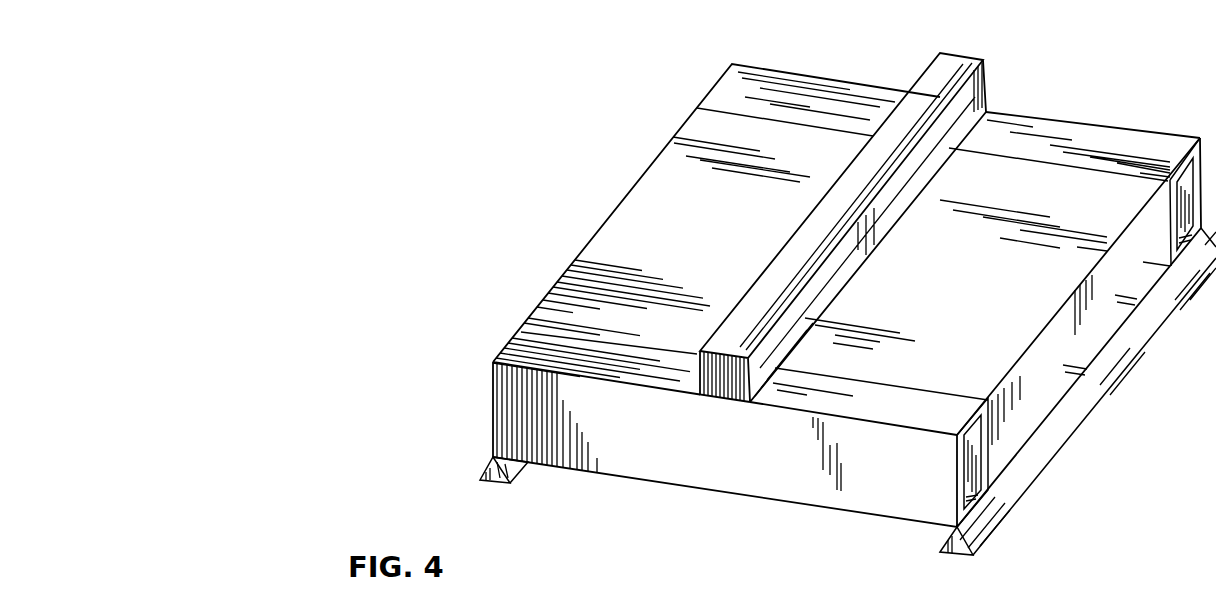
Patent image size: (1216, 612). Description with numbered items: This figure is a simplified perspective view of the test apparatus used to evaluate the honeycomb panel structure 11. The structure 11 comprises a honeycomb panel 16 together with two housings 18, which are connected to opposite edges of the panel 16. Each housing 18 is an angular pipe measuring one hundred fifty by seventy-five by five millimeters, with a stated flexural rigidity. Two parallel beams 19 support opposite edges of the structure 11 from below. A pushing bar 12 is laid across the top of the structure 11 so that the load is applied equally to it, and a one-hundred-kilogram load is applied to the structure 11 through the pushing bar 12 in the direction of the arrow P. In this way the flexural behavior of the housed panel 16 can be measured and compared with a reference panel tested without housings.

The honeycomb panel structure 11 is at (638, 166).
The pushing bar 12 is at (924, 70).
The honeycomb panel 16 is at (590, 243).
The housing 18 is at (1158, 139).
The parallel beam 19 is at (519, 480).
The arrow P is at (830, 222).